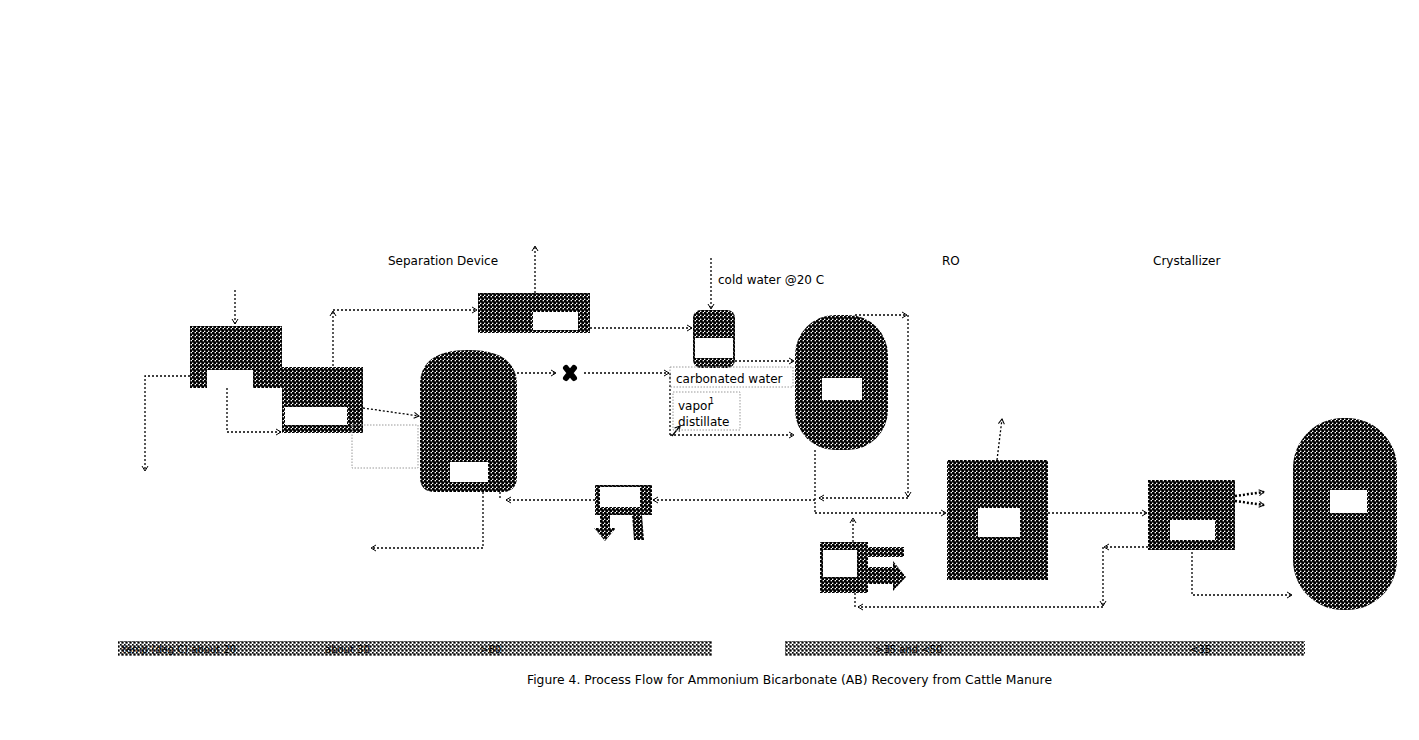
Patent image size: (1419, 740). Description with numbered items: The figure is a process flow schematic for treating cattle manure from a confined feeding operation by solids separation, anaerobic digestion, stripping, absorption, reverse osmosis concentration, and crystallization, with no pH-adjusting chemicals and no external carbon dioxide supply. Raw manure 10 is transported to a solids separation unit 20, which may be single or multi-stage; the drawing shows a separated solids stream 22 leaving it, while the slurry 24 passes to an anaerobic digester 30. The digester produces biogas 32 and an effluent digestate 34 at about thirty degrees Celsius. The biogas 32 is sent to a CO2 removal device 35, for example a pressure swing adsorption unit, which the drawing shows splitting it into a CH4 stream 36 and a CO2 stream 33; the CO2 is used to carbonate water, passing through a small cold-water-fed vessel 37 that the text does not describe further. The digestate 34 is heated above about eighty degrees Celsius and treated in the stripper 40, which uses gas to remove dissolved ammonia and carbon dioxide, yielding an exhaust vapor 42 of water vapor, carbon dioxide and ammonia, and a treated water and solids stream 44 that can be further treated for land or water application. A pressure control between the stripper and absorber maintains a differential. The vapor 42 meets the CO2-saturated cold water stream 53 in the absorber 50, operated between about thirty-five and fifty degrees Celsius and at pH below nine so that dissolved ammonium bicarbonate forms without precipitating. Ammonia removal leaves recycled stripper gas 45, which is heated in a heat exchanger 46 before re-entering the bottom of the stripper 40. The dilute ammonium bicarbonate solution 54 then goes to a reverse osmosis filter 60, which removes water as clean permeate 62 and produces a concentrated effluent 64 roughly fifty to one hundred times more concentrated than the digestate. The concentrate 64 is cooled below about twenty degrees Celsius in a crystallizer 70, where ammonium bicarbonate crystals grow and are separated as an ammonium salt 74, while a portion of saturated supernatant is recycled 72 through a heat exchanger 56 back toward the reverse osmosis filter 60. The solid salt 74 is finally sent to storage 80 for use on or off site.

The raw manure 10 is at (215, 269).
The solids separation unit 20 is at (236, 357).
The solids stream 22 is at (156, 423).
The slurry/effluent 24 is at (219, 410).
The anaerobic digester 30 is at (322, 400).
The biogas 32 is at (351, 317).
The CO2 stream 33 is at (641, 334).
The effluent digestate 34 is at (388, 438).
The CO2 removal device 35 is at (534, 313).
The CH4 stream 36 is at (569, 257).
The condenser 37 is at (714, 339).
The stripper 40 is at (468, 421).
The exhaust vapor 42 is at (590, 376).
The treated water and solids 44 is at (403, 517).
The recycled stripper gas 45 is at (728, 513).
The heat exchanger 46 is at (623, 513).
The absorber 50 is at (841, 382).
The cold water stream 53 is at (764, 348).
The effluent ammonium bicarbonate solution 54 is at (692, 447).
The heat exchanger 56 is at (864, 535).
The reverse osmosis filter 60 is at (997, 520).
The permeate 62 is at (972, 395).
The concentrated effluent 64 is at (1101, 484).
The crystallizer 70 is at (1206, 515).
The recycled saturated ammonium bicarbonate supernatant 72 is at (1005, 593).
The ammonium salt 74 is at (1242, 573).
The storage 80 is at (1326, 506).